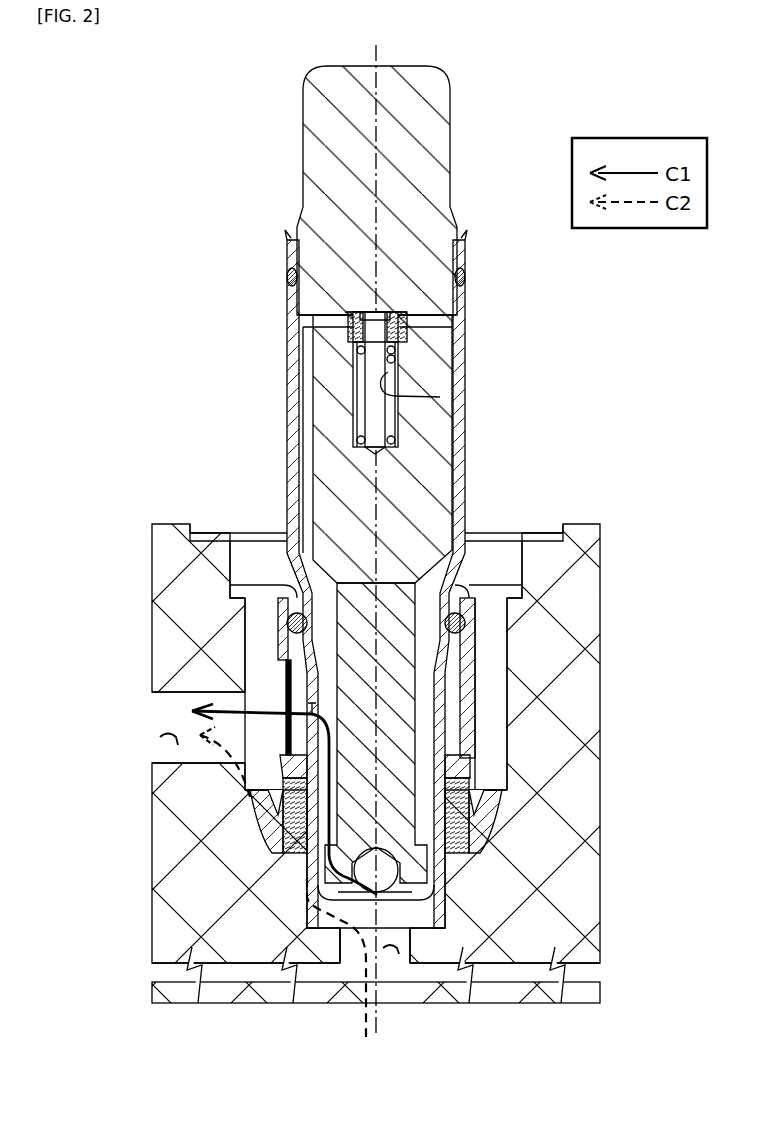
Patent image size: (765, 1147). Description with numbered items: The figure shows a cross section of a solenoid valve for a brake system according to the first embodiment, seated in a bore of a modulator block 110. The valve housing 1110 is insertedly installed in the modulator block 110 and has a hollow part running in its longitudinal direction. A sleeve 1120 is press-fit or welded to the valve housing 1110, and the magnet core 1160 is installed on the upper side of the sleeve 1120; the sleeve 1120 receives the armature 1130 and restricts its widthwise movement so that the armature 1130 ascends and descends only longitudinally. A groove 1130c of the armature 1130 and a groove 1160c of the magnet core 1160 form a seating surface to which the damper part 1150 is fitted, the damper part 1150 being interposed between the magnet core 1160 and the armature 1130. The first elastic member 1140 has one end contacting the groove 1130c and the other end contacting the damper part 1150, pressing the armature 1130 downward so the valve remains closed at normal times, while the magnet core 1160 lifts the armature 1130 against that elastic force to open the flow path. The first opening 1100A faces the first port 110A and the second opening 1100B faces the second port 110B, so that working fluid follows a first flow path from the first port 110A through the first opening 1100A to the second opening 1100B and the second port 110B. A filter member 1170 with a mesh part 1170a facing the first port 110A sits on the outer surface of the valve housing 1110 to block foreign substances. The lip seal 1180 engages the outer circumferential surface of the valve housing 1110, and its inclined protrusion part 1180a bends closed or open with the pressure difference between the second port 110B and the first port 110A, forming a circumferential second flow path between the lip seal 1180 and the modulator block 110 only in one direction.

The modulator block 110 is at (590, 583).
The first port 110A is at (165, 740).
The second port 110B is at (390, 955).
The first opening 1100A is at (307, 710).
The second opening 1100B is at (378, 896).
The valve housing 1110 is at (433, 858).
The sleeve 1120 is at (460, 305).
The armature 1130 is at (440, 478).
The groove of the armature 1130c is at (440, 397).
The first elastic member 1140 is at (360, 437).
The damper part 1150 is at (350, 342).
The magnet core 1160 is at (440, 133).
The groove of the magnet core 1160c is at (370, 315).
The filter member 1170 is at (283, 622).
The mesh part 1170a is at (287, 667).
The lip seal 1180 is at (270, 852).
The inclined protrusion part 1180a is at (258, 806).